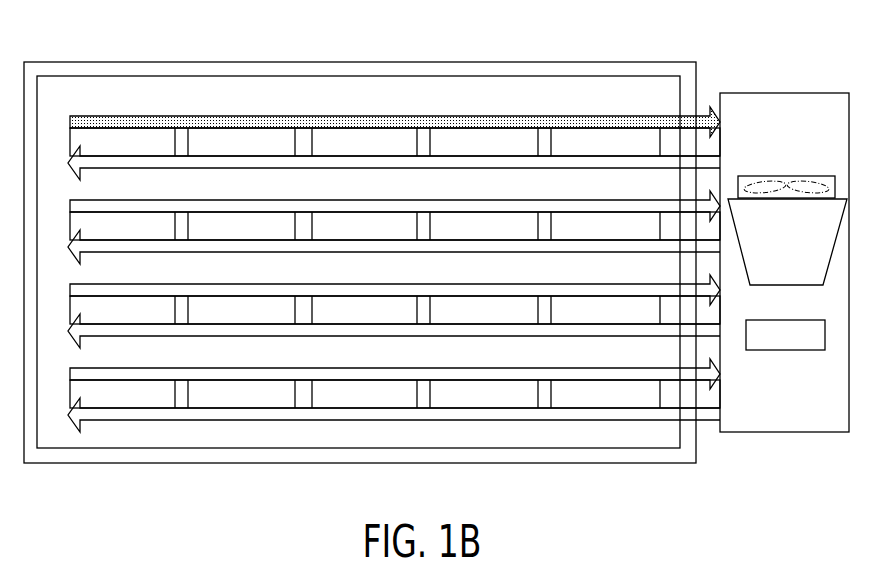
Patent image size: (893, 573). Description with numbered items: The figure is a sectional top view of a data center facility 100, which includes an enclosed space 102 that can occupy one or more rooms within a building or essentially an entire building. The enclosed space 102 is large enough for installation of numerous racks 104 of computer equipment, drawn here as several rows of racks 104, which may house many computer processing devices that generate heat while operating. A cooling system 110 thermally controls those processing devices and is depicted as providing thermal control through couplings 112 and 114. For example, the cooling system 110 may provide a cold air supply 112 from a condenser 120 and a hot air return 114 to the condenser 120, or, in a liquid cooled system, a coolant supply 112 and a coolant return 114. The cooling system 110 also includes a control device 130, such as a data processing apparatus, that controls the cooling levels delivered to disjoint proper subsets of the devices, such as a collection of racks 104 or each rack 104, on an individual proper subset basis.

The data center facility 100 is at (164, 46).
The enclosed space 102 is at (45, 105).
The racks 104 is at (108, 152).
The cooling system 110 is at (768, 122).
The coupling (cold air supply / coolant supply) 112 is at (688, 416).
The coupling (hot air return / coolant return) 114 is at (690, 113).
The condenser 120 is at (772, 284).
The control device 130 is at (772, 345).